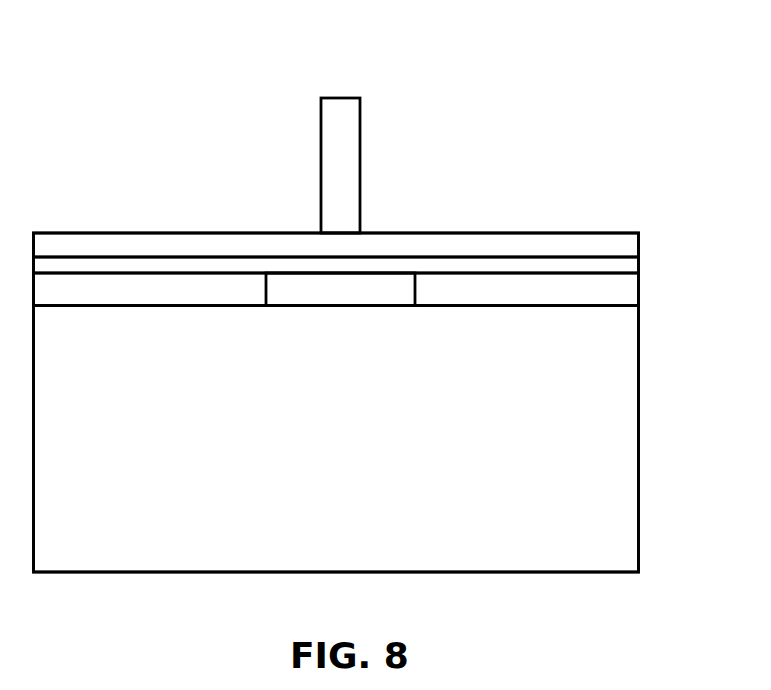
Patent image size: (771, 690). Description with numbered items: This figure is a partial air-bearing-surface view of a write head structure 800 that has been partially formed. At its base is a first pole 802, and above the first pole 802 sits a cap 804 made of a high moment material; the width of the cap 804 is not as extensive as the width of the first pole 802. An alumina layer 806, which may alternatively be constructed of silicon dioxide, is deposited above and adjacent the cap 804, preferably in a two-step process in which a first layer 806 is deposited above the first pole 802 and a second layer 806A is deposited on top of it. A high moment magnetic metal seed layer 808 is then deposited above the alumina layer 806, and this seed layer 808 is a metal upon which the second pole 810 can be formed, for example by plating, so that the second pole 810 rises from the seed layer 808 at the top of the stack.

The write head structure 800 is at (154, 156).
The first pole 802 is at (639, 487).
The cap 804 is at (382, 273).
The alumina layer 806 is at (639, 287).
The second layer 806A is at (639, 265).
The high moment magnetic metal seed layer 808 is at (639, 245).
The second pole 810 is at (361, 146).